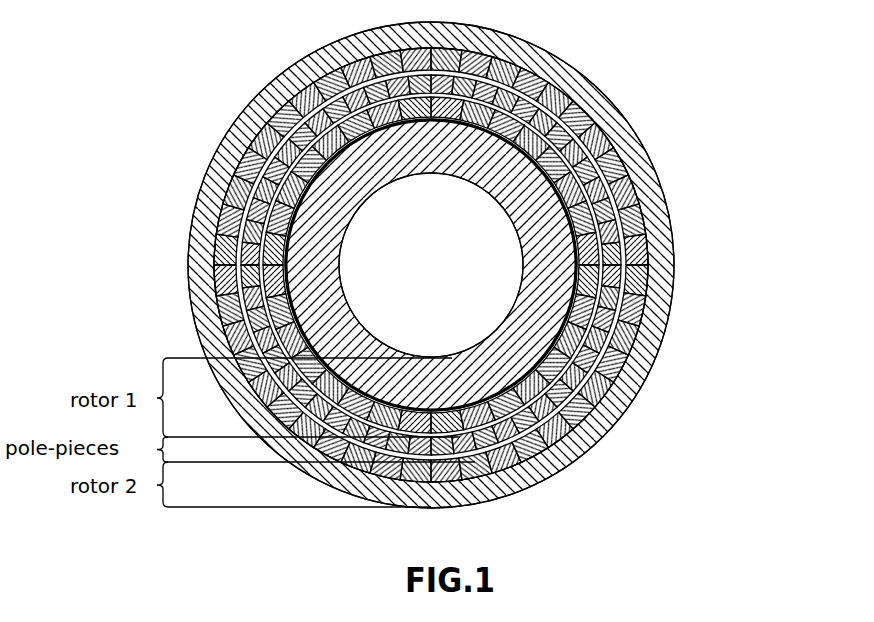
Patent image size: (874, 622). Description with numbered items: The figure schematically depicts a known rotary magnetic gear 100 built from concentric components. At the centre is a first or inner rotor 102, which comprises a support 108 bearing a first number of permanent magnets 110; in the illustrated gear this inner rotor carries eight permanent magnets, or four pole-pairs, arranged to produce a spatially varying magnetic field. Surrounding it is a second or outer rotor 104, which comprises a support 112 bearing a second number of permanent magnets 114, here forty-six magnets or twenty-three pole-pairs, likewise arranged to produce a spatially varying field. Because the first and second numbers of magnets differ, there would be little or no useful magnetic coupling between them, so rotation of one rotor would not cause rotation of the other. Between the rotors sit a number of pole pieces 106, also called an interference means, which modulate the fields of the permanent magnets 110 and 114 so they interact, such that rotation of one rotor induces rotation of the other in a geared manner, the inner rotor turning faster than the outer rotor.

The rotary magnetic gear 100 is at (460, 277).
The first rotor 102 is at (520, 282).
The second rotor 104 is at (217, 157).
The pole pieces 106 is at (521, 477).
The support 108 is at (367, 332).
The permanent magnets 110 is at (228, 295).
The support 112 is at (655, 162).
The permanent magnets 114 is at (648, 231).